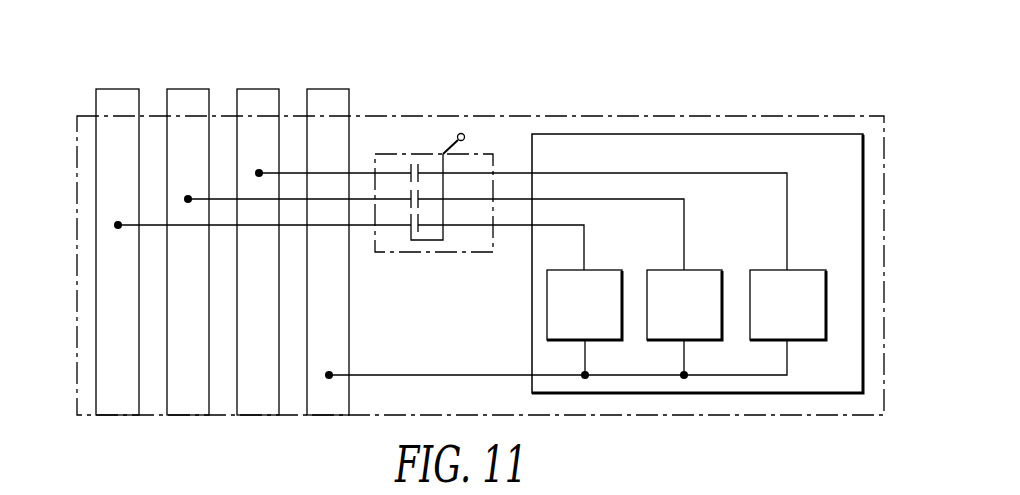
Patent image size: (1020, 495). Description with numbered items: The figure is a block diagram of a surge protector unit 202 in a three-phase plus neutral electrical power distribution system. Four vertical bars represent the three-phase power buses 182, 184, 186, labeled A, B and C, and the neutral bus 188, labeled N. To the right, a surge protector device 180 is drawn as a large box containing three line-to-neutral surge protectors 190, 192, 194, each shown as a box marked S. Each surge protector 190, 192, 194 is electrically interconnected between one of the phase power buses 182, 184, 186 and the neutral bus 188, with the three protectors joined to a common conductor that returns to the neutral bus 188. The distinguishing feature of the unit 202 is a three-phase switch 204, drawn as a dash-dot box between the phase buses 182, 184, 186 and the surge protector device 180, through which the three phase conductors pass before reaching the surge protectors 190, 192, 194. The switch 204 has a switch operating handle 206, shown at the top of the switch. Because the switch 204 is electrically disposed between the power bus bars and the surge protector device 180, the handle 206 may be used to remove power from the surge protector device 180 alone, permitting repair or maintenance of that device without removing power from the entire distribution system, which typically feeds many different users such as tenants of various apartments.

The surge protector device 180 is at (683, 134).
The three-phase power bus (phase A) 182 is at (102, 88).
The three-phase power bus (phase B) 184 is at (175, 88).
The three-phase power bus (phase C) 186 is at (245, 88).
The neutral bus 188 is at (317, 88).
The line-to-neutral surge protector 190 is at (598, 270).
The line-to-neutral surge protector 192 is at (696, 270).
The line-to-neutral surge protector 194 is at (797, 270).
The surge protector unit 202 is at (869, 115).
The three-phase switch 204 is at (398, 153).
The switch operating handle 206 is at (463, 131).